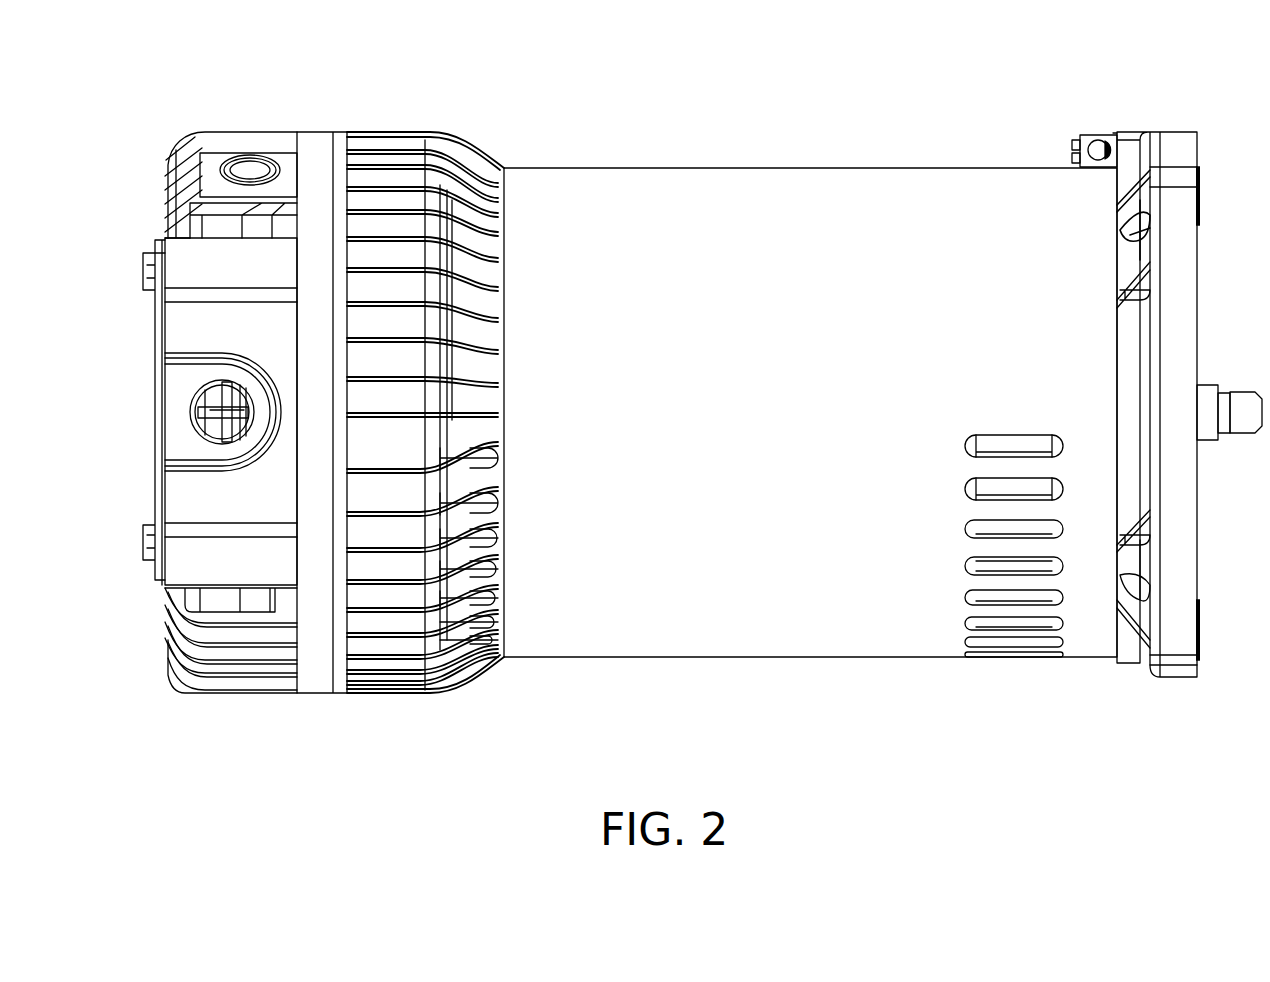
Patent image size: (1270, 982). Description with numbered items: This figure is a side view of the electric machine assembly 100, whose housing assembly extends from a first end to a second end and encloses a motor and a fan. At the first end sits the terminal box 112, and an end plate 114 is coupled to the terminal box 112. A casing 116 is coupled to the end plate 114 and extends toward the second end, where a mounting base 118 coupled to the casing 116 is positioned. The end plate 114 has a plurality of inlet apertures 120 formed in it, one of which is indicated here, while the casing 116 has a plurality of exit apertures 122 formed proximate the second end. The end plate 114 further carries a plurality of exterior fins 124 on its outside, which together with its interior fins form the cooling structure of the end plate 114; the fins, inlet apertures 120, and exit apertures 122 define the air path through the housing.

The electric machine assembly 100 is at (558, 108).
The terminal box 112 is at (257, 590).
The end plate 114 is at (452, 683).
The casing 116 is at (764, 658).
The mounting base 118 is at (1180, 677).
The inlet apertures 120 is at (500, 510).
The exit apertures 122 is at (1063, 440).
The exterior fins 124 is at (425, 132).